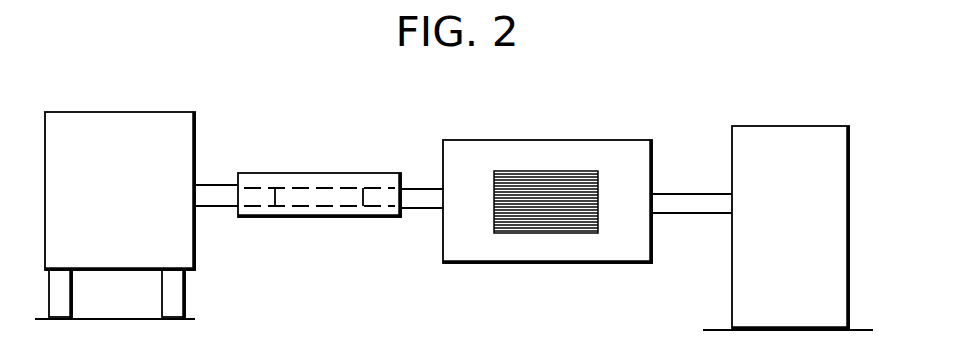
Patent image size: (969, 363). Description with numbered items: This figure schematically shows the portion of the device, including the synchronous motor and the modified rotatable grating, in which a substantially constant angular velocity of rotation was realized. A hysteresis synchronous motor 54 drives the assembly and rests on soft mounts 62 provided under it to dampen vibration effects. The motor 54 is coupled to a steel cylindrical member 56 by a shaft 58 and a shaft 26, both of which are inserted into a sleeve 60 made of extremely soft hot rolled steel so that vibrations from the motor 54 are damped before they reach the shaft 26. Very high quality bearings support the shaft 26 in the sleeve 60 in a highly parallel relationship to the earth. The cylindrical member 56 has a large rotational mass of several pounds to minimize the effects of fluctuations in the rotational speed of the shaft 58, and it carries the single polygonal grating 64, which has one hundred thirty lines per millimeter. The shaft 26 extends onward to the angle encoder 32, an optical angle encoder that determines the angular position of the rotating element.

The hysteresis synchronous motor 54 is at (118, 112).
The soft mounts 62 is at (162, 295).
The shaft 58 is at (212, 184).
The sleeve 60 is at (310, 172).
The shaft 26 is at (427, 189).
The steel cylindrical member 56 is at (495, 263).
The polygonal grating 64 is at (542, 178).
The angle encoder 32 is at (849, 255).